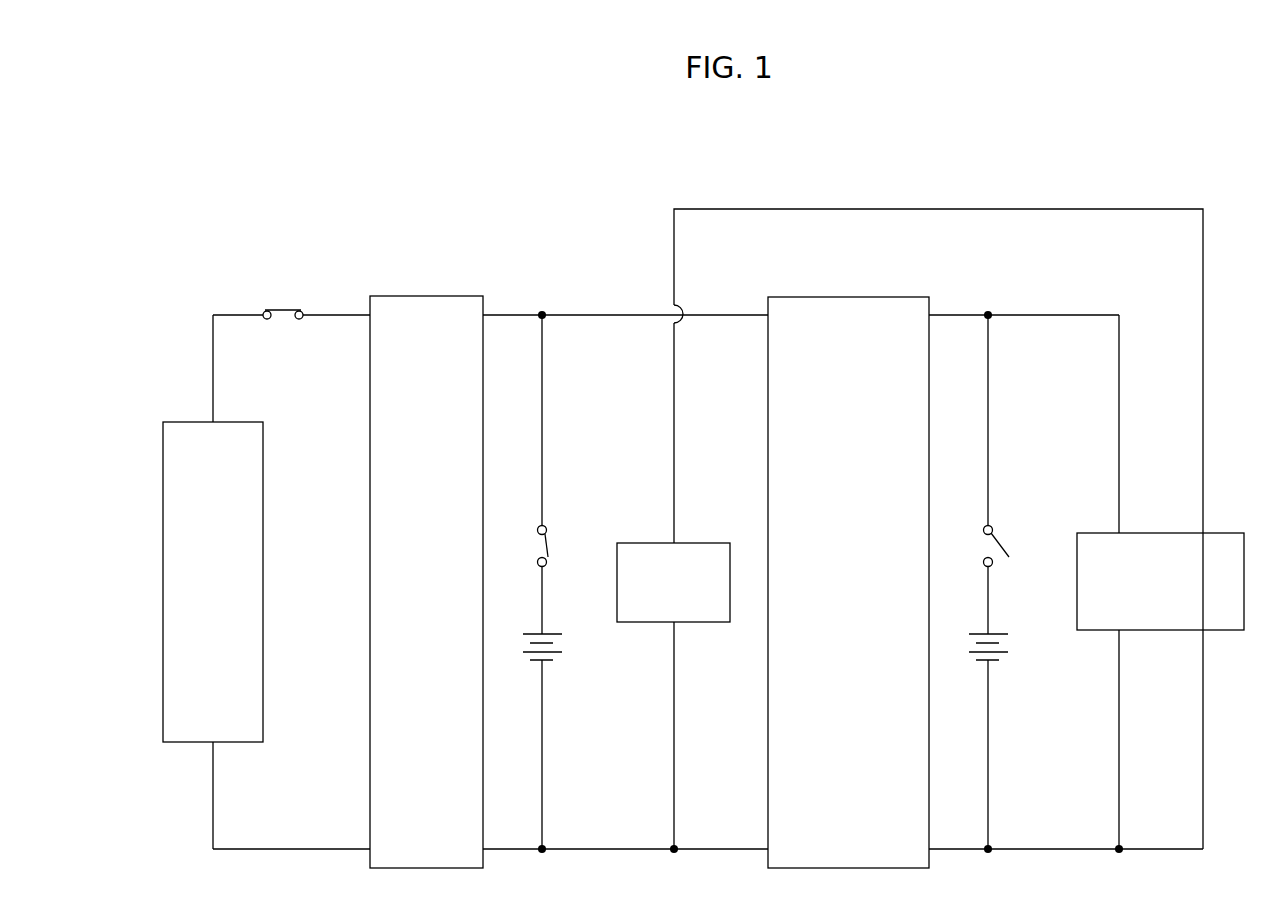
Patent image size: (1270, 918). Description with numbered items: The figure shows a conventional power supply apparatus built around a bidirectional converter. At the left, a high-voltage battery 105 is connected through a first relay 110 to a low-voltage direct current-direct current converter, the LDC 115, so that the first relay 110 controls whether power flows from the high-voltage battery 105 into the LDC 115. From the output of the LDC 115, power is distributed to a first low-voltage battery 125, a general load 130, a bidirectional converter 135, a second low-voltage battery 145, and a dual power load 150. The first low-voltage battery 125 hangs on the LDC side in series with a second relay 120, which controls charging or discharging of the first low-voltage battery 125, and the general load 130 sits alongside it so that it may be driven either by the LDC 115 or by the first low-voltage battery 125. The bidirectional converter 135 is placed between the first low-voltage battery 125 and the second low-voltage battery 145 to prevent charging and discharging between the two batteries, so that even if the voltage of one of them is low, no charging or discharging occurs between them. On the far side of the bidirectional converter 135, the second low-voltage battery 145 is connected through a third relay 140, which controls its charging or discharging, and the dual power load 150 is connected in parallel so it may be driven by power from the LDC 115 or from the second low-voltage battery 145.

The high-voltage battery 105 is at (185, 422).
The first relay 110 is at (283, 308).
The low-voltage direct current-direct current converter (LDC) 115 is at (420, 296).
The second relay 120 is at (547, 538).
The first low-voltage battery 125 is at (550, 662).
The general load 130 is at (705, 543).
The bidirectional converter 135 is at (905, 297).
The third relay 140 is at (1003, 537).
The second low-voltage battery 145 is at (995, 662).
The dual power load 150 is at (1157, 533).